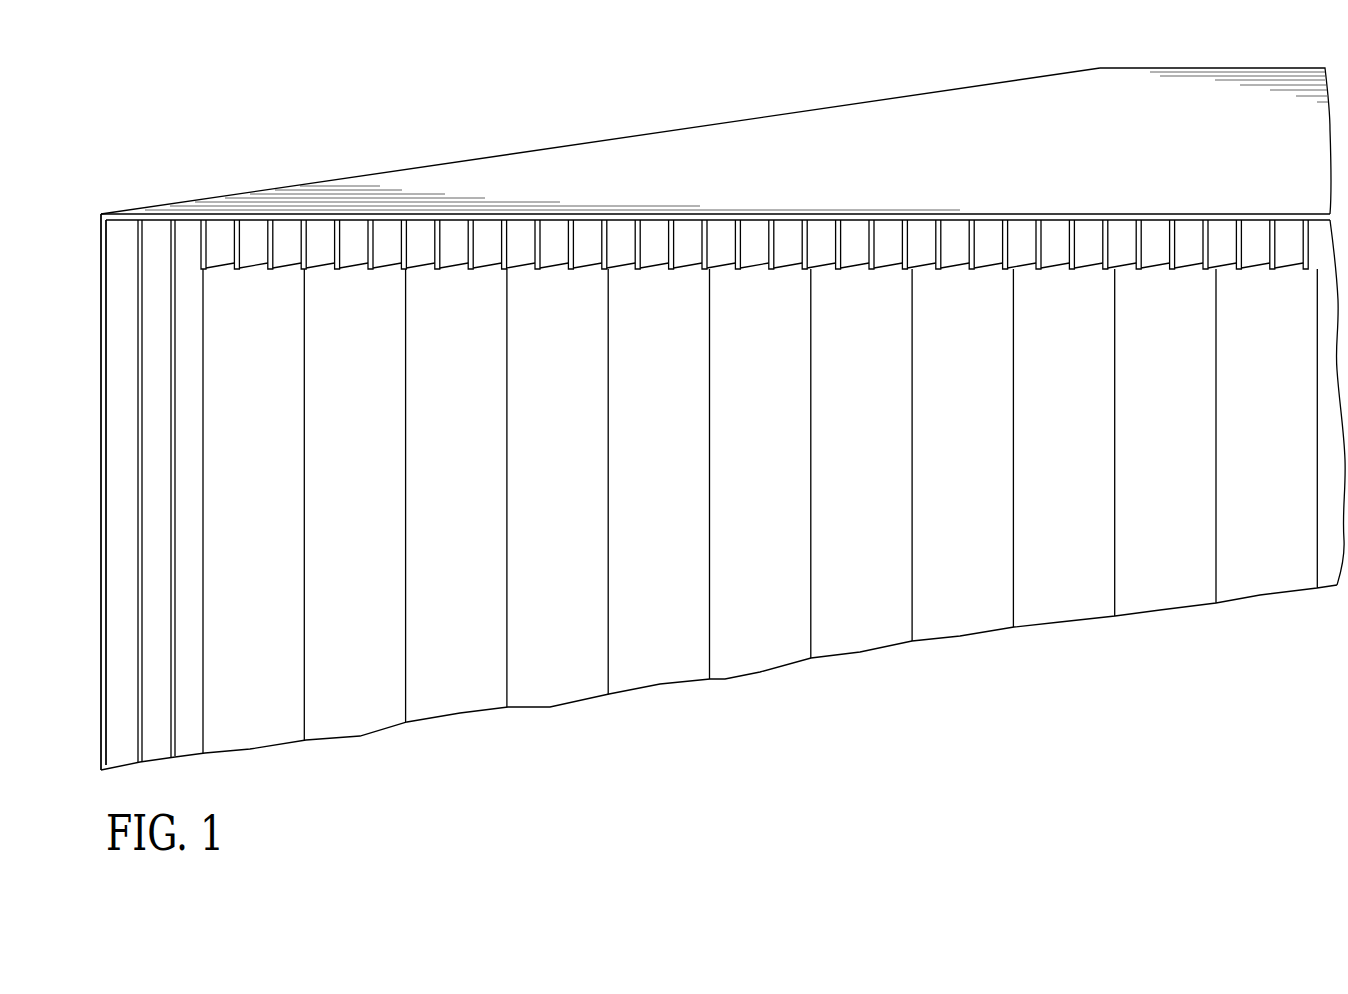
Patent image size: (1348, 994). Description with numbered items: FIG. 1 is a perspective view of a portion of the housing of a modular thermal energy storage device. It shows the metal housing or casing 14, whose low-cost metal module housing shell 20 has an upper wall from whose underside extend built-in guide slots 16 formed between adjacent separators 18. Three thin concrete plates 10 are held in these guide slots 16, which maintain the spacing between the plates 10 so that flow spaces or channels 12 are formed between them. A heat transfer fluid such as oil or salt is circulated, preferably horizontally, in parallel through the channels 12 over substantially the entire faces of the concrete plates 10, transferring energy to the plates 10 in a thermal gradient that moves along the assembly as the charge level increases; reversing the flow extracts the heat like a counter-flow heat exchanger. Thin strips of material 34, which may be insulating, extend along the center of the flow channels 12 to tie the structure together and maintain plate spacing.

The concrete plates 10 is at (153, 677).
The flow channels 12 is at (173, 222).
The metal housing or casing 14 is at (919, 92).
The guide slots 16 is at (252, 240).
The separators 18 is at (387, 237).
The metal module housing shell 20 is at (795, 133).
The thin strips of material 34 is at (135, 410).